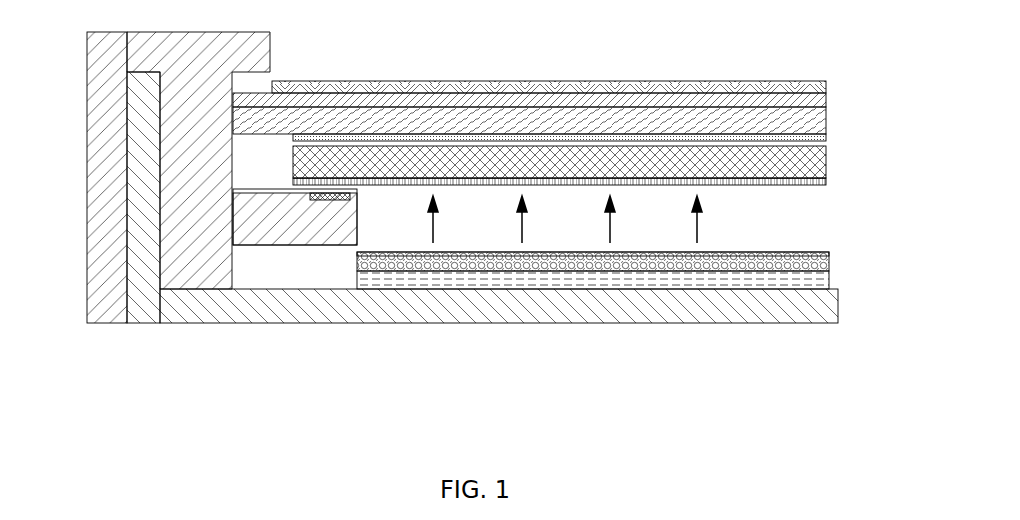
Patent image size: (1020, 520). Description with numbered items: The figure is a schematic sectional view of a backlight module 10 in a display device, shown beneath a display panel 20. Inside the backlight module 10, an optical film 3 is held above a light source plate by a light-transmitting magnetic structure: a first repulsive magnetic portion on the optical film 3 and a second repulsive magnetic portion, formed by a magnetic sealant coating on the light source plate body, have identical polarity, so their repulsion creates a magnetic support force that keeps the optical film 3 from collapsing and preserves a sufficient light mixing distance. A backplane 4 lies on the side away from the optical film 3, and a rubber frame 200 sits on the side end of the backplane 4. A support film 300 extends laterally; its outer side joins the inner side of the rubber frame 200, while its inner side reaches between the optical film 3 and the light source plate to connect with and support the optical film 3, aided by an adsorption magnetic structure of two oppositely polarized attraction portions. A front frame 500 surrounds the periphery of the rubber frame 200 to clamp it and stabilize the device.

The backlight module 10 is at (520, 32).
The display panel 20 is at (832, 103).
The optical film 3 is at (813, 170).
The backplane 4 is at (460, 305).
The rubber frame 200 is at (187, 232).
The support film 300 is at (251, 223).
The front frame 500 is at (110, 130).